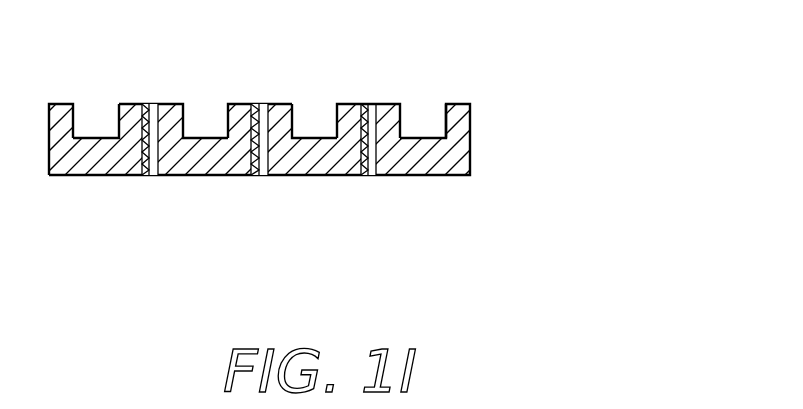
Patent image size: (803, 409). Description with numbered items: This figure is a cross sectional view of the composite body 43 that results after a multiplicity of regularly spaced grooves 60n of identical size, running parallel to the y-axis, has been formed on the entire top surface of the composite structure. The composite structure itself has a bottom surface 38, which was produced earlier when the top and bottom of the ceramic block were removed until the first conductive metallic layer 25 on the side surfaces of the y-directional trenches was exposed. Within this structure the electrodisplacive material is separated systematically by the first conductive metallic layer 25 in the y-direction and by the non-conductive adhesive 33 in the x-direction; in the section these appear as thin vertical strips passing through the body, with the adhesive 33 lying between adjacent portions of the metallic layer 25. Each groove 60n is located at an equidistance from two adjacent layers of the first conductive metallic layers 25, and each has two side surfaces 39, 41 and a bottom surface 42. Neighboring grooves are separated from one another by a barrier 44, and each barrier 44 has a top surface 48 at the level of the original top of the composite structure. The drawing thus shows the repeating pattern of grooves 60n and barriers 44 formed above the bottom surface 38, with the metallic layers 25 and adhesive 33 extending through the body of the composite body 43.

The composite body 43 is at (285, 132).
The bottom surface 38 is at (268, 168).
The side surface 39 is at (61, 134).
The bottom surface 42 is at (90, 146).
The side surface 41 is at (121, 132).
The barrier 44 is at (260, 139).
The first conductive metallic layer 25 is at (252, 163).
The non-conductive adhesive 33 is at (259, 163).
The top surface 48 is at (348, 106).
The grooves 60n is at (402, 184).